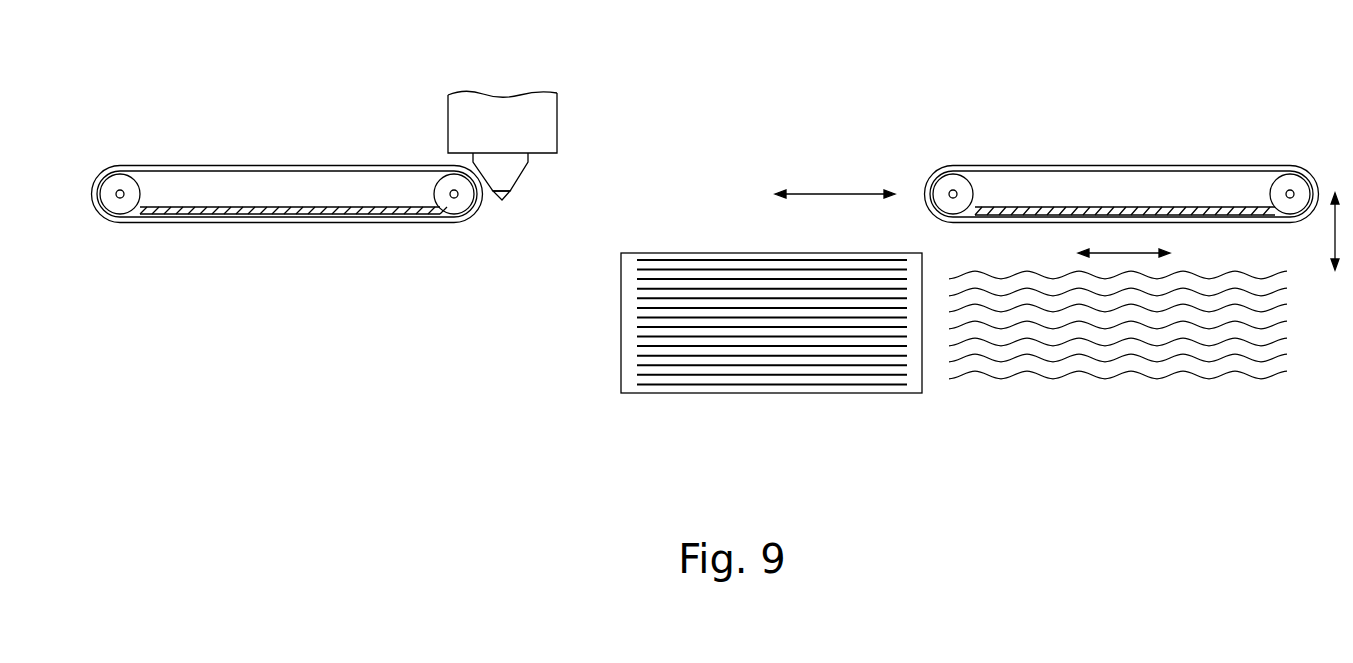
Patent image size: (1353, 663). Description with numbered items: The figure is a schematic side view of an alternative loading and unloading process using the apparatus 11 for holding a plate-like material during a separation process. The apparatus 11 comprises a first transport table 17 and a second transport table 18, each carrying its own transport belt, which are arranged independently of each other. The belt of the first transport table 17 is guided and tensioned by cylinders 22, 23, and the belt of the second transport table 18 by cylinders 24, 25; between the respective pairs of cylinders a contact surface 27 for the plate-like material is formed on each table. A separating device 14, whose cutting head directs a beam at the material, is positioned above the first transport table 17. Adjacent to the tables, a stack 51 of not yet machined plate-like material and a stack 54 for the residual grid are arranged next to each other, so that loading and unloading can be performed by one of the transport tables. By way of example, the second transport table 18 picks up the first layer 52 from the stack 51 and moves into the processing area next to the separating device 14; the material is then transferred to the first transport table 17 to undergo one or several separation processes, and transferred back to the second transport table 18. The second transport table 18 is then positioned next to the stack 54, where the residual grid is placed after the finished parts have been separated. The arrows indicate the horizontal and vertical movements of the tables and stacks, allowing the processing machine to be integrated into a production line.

The apparatus 11 is at (1124, 121).
The separating device 14 is at (515, 115).
The first transport table 17 is at (292, 175).
The second transport table 18 is at (1124, 141).
The cylinder 22 is at (450, 206).
The cylinder 23 is at (113, 183).
The cylinder 24 is at (952, 184).
The cylinder 25 is at (1295, 188).
The contact surface 27 is at (271, 230).
The stack 51 is at (736, 355).
The first layer 52 is at (635, 346).
The stack 54 is at (1083, 353).